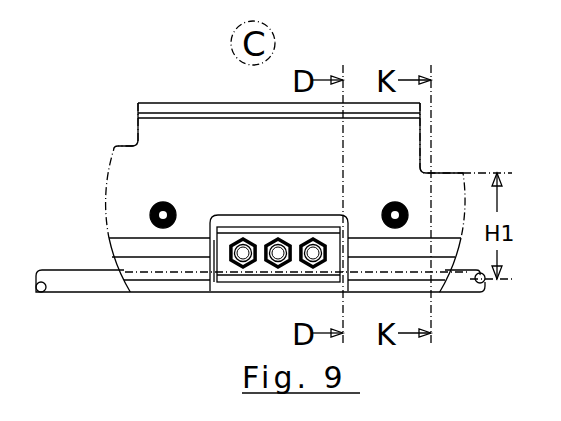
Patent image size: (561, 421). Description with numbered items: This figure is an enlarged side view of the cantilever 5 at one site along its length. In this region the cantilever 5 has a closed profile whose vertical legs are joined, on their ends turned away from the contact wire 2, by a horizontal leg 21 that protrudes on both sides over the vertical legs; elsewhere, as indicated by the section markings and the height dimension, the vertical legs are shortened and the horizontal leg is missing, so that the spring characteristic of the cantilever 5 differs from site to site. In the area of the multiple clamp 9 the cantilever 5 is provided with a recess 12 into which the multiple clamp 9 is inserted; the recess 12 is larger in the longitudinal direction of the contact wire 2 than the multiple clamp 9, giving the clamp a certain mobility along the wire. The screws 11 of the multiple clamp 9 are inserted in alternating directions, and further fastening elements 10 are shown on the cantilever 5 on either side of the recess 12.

The contact wire 2 is at (92, 294).
The cantilever 5 is at (86, 130).
The multiple clamp 9 is at (267, 280).
The nut 10 is at (150, 206).
The screw 11 is at (233, 260).
The recess 12 is at (210, 281).
The horizontal leg 21 is at (172, 108).